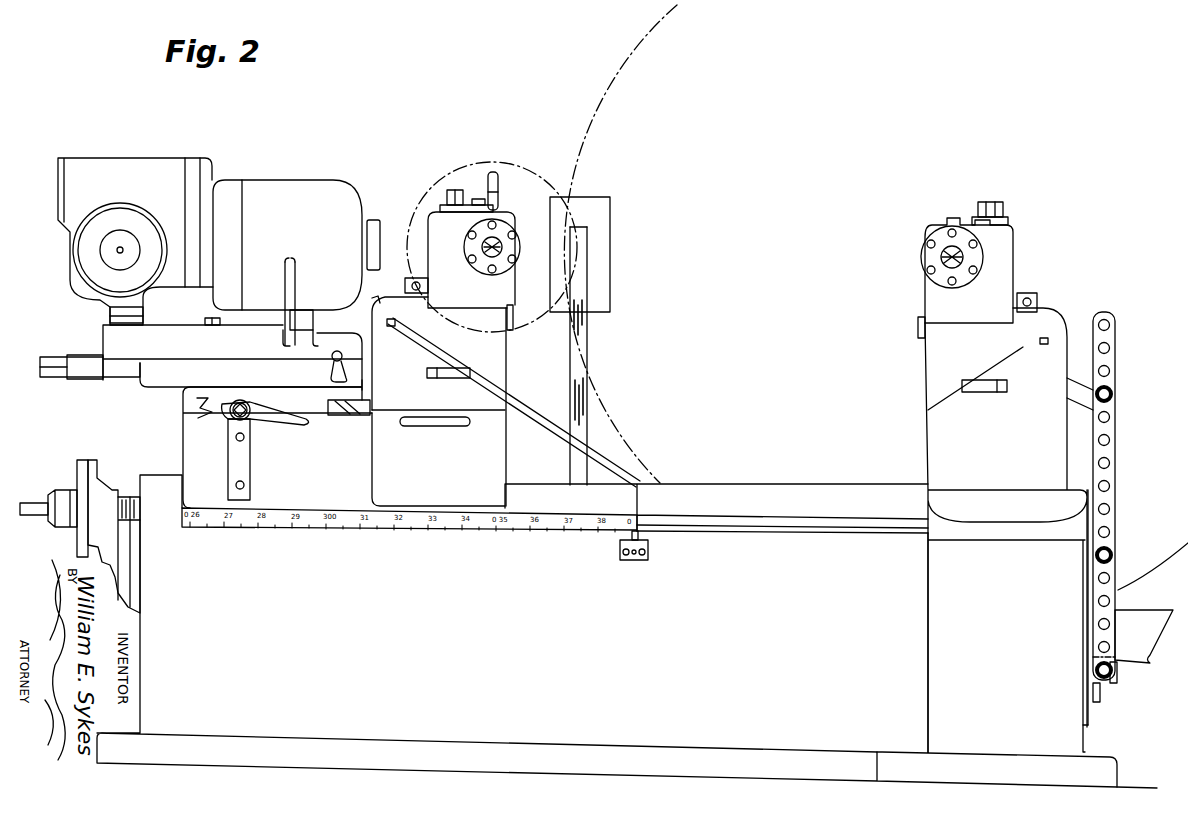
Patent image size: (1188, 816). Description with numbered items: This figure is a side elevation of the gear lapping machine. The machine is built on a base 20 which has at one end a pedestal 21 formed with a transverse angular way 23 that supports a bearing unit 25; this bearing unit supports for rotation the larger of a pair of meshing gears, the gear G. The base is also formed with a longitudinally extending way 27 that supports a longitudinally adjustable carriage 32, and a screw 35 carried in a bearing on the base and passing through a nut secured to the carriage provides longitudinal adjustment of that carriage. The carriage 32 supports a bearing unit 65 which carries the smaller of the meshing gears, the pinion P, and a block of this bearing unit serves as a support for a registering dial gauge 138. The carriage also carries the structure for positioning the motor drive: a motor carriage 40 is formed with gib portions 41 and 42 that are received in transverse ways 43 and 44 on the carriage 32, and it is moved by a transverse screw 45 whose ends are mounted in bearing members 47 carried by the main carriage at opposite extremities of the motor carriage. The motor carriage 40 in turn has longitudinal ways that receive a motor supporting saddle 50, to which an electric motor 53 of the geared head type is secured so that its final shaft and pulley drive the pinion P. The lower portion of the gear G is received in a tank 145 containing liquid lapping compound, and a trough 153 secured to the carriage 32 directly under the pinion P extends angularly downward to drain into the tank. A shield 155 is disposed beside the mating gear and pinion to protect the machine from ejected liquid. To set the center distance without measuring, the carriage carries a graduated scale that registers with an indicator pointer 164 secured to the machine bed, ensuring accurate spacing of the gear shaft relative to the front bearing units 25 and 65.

The base 20 is at (627, 631).
The pedestal 21 is at (997, 547).
The transverse angular way 23 is at (1043, 338).
The bearing unit 25 is at (1047, 281).
The longitudinally extending way 27 is at (765, 515).
The carriage 32 is at (438, 458).
The screw 35 is at (45, 498).
The motor carriage 40 is at (277, 444).
The gib portion 41 is at (215, 412).
The gib portion 42 is at (343, 416).
The transverse way 43 is at (200, 402).
The transverse way 44 is at (375, 414).
The transverse screw 45 is at (232, 418).
The bearing member 47 is at (246, 473).
The motor supporting saddle 50 is at (201, 354).
The electric motor 53 is at (296, 263).
The bearing unit 65 is at (421, 190).
The registering dial gauge 138 is at (498, 182).
The tank 145 is at (1150, 660).
The trough 153 is at (602, 457).
The shield 155 is at (610, 258).
The indicator pointer 164 is at (632, 540).
The gear G is at (618, 88).
The pinion P is at (460, 165).